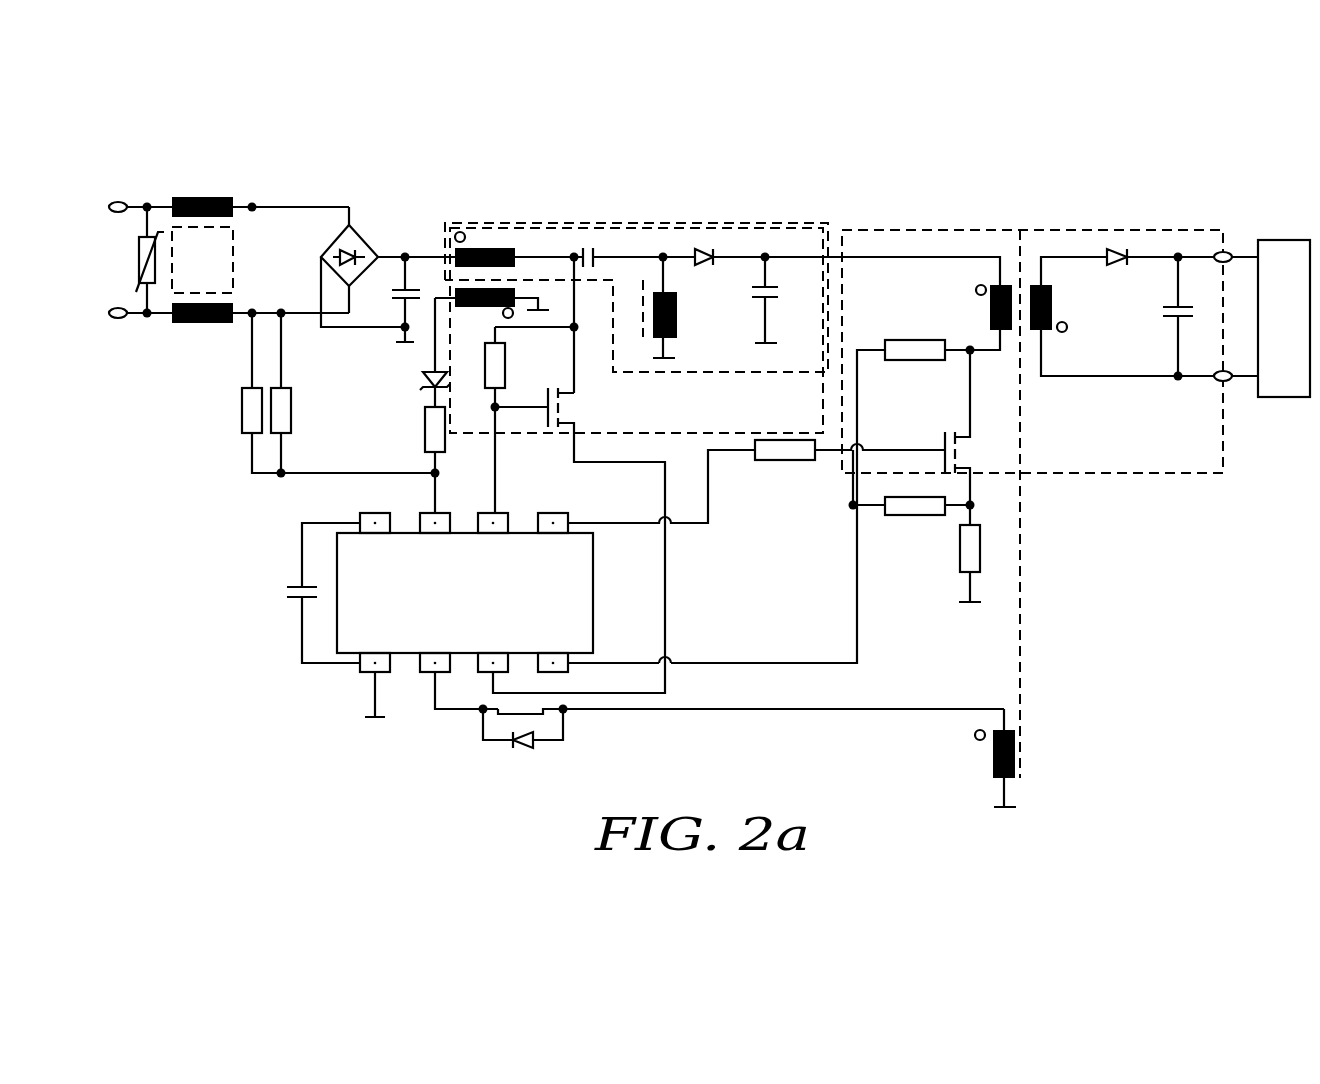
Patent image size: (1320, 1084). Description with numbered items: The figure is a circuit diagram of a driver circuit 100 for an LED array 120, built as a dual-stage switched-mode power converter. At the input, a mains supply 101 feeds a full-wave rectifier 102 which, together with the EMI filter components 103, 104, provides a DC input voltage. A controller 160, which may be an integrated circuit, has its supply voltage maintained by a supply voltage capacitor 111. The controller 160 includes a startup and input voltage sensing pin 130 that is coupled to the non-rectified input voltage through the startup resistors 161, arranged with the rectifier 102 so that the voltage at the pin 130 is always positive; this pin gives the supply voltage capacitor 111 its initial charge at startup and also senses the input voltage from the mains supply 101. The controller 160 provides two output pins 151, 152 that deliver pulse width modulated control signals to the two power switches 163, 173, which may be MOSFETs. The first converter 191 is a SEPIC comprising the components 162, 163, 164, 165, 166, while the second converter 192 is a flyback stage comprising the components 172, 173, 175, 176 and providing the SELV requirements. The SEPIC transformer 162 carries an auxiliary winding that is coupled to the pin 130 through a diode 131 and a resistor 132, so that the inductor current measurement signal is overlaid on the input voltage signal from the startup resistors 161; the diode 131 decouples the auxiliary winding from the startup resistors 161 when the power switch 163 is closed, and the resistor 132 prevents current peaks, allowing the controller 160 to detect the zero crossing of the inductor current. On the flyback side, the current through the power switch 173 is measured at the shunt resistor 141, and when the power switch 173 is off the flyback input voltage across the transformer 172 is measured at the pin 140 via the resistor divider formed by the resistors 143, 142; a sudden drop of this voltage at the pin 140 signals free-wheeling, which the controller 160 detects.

The driver circuit 100 is at (1077, 687).
The mains supply 101 is at (137, 264).
The rectifier 102 is at (362, 242).
The EMI filter component 103 is at (205, 197).
The EMI filter component 104 is at (398, 300).
The supply voltage capacitor 111 is at (285, 592).
The LED array 120 is at (1282, 398).
The startup and input voltage sensing pin 130 is at (448, 522).
The diode 131 is at (425, 379).
The resistor 132 is at (425, 426).
The pin 140 is at (571, 670).
The shunt resistor 141 is at (960, 534).
The resistor 142 is at (928, 517).
The resistor 143 is at (935, 338).
The output pin 151 is at (508, 522).
The output pin 152 is at (569, 522).
The controller 160 is at (337, 628).
The startup resistors 161 is at (242, 413).
The SEPIC transformer 162 is at (490, 247).
The power switch 163 is at (548, 432).
The component 164 is at (590, 246).
The component 165 is at (704, 247).
The component 166 is at (750, 291).
The transformer 172 is at (988, 315).
The power switch 173 is at (946, 431).
The component 175 is at (1106, 245).
The component 176 is at (1162, 310).
The first converter 191 is at (651, 222).
The second converter 192 is at (912, 228).